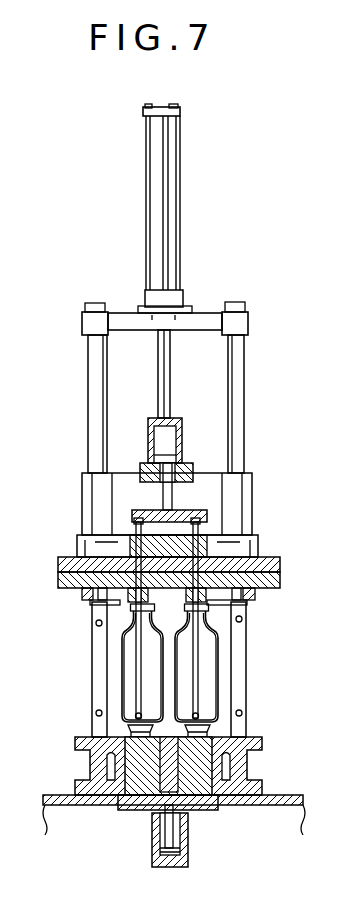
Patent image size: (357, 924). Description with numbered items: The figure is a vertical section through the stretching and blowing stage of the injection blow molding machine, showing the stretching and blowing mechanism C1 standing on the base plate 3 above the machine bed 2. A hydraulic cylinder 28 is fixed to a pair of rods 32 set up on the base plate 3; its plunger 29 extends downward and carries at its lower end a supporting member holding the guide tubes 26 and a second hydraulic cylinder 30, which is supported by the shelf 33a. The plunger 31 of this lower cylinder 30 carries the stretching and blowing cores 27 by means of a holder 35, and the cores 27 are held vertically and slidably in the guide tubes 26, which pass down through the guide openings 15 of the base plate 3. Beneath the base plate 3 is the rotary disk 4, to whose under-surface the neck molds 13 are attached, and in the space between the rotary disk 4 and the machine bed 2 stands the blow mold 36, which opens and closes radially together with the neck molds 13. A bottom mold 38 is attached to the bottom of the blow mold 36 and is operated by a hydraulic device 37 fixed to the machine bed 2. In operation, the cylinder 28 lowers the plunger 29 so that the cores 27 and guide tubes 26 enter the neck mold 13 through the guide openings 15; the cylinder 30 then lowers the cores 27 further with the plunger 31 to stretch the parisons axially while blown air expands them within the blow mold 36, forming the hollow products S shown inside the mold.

The stretching and blowing mechanism C1 is at (196, 172).
The hydraulic cylinder 28 is at (165, 216).
The rods 32 is at (95, 372).
The plunger 29 is at (163, 376).
The hydraulic cylinder 30 is at (184, 433).
The plunger 31 is at (165, 491).
The shelf 33a is at (220, 479).
The holder 35 is at (207, 518).
The stretching and blowing cores 27 is at (205, 548).
The guide tubes 26 is at (118, 530).
The guide openings 15 is at (72, 562).
The base plate 3 is at (280, 565).
The rotary disk 4 is at (278, 588).
The neck molds 13 is at (116, 603).
The hollow products S is at (120, 668).
The blow mold 36 is at (228, 696).
The bottom mold 38 is at (126, 730).
The machine bed 2 is at (77, 806).
The hydraulic device 37 is at (188, 852).